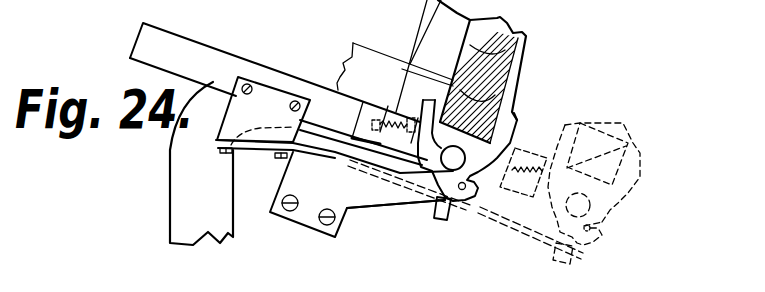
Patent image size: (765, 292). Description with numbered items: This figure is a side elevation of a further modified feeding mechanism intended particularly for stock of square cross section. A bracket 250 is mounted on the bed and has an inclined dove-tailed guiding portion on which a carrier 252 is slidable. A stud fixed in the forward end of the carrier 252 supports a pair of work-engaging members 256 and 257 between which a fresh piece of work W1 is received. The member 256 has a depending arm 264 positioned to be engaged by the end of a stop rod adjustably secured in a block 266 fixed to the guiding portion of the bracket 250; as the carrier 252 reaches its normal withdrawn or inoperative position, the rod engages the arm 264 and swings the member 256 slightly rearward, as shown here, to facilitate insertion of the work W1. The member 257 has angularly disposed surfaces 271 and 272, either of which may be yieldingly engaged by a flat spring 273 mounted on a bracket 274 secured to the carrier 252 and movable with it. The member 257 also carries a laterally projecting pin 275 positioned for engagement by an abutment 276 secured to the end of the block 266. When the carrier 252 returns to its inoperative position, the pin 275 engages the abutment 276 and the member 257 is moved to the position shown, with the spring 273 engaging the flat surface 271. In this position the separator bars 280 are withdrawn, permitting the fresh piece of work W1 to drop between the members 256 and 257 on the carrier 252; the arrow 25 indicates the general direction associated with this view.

The arm member 25 is at (390, 2).
The bracket 250 is at (187, 193).
The carrier 252 is at (200, 28).
The work-engaging member 256 is at (422, 93).
The work-engaging member 257 is at (512, 112).
The depending arm 264 is at (441, 219).
The block 266 is at (297, 168).
The flat surface 271 is at (553, 204).
The angularly disposed surface 272 is at (613, 207).
The flat spring 273 is at (545, 234).
The bracket 274 is at (234, 118).
The pin 275 is at (468, 189).
The abutment 276 is at (388, 199).
The separator bar 280 is at (353, 50).
The piece of work W1 is at (522, 61).